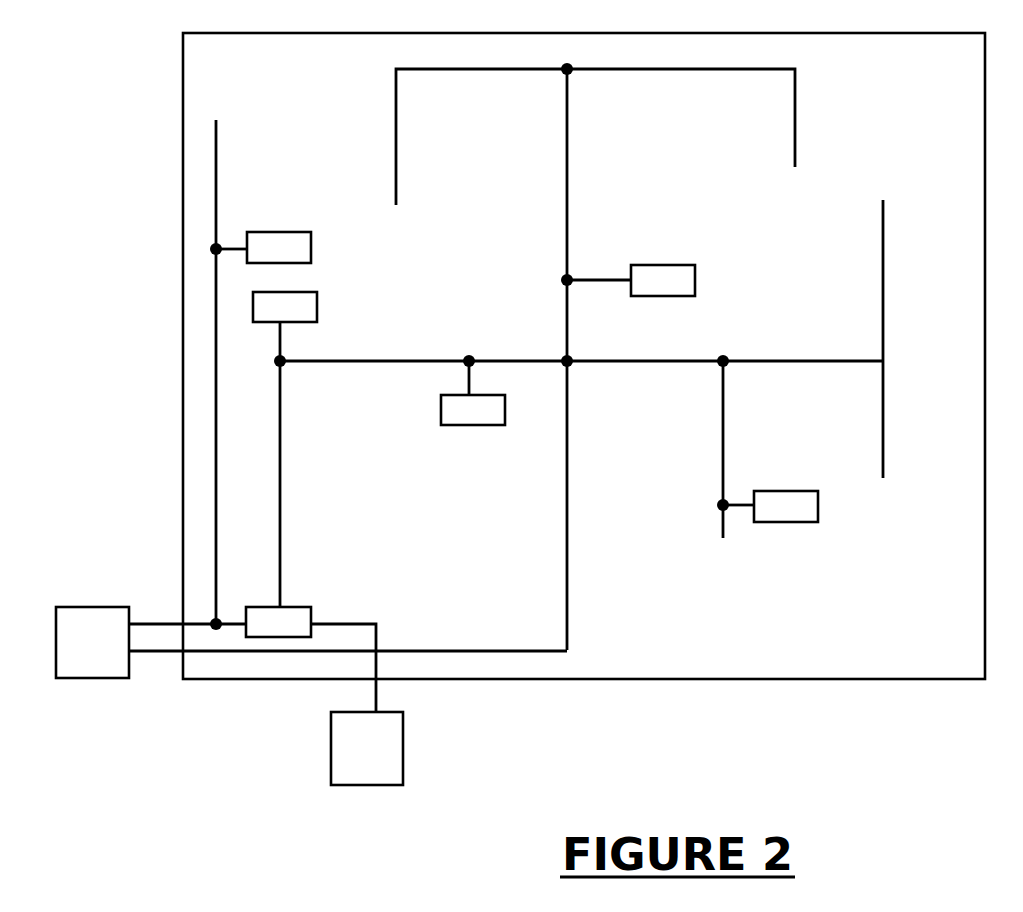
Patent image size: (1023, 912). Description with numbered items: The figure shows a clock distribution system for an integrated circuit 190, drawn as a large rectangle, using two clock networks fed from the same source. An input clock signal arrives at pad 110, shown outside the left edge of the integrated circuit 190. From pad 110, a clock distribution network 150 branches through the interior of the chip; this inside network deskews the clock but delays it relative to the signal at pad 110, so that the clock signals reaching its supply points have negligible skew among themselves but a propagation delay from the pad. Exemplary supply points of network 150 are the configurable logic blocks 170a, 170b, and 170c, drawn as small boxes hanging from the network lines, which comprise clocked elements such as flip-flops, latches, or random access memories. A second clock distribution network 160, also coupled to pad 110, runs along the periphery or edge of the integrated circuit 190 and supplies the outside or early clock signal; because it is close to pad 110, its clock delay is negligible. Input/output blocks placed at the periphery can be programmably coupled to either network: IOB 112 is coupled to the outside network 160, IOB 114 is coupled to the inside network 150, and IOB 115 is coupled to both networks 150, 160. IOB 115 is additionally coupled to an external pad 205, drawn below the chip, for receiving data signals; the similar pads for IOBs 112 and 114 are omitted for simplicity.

The pad 110 is at (80, 665).
The IOB 112 is at (306, 246).
The IOB 114 is at (306, 302).
The IOB 115 is at (293, 613).
The clock distribution network 150 is at (382, 101).
The second clock distribution network 160 is at (219, 148).
The configurable logic block 170a is at (474, 417).
The configurable logic block 170b is at (688, 274).
The configurable logic block 170c is at (796, 515).
The integrated circuit 190 is at (931, 660).
The external pad 205 is at (365, 762).